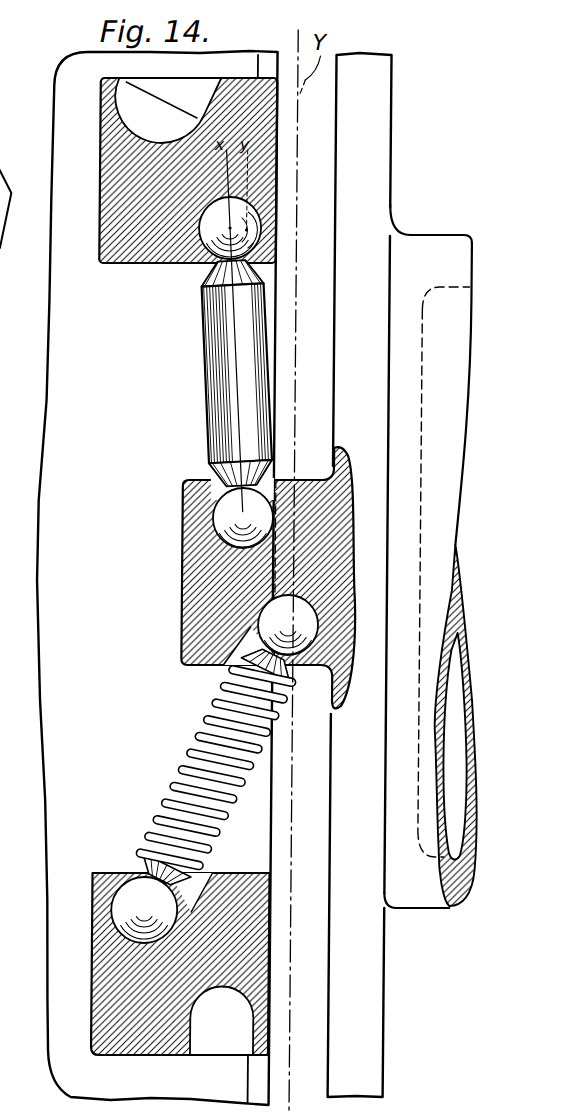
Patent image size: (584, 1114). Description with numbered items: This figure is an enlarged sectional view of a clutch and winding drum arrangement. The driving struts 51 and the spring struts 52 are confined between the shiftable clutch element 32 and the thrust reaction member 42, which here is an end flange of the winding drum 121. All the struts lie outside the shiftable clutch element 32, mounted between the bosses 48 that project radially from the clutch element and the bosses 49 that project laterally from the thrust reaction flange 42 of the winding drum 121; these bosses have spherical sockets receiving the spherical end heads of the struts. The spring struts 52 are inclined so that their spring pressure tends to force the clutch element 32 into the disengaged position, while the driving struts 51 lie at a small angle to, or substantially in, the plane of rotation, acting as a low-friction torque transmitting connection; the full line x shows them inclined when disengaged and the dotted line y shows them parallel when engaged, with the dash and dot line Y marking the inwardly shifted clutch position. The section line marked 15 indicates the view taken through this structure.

The shiftable clutch element 32 is at (76, 84).
The thrust reaction member 42 is at (380, 64).
The winding drum 121 is at (439, 247).
The bosses 48 is at (124, 265).
The bosses 49 is at (197, 580).
The driving struts 51 is at (226, 391).
The spring struts 52 is at (192, 770).
The section line 15- 15 is at (290, 152).